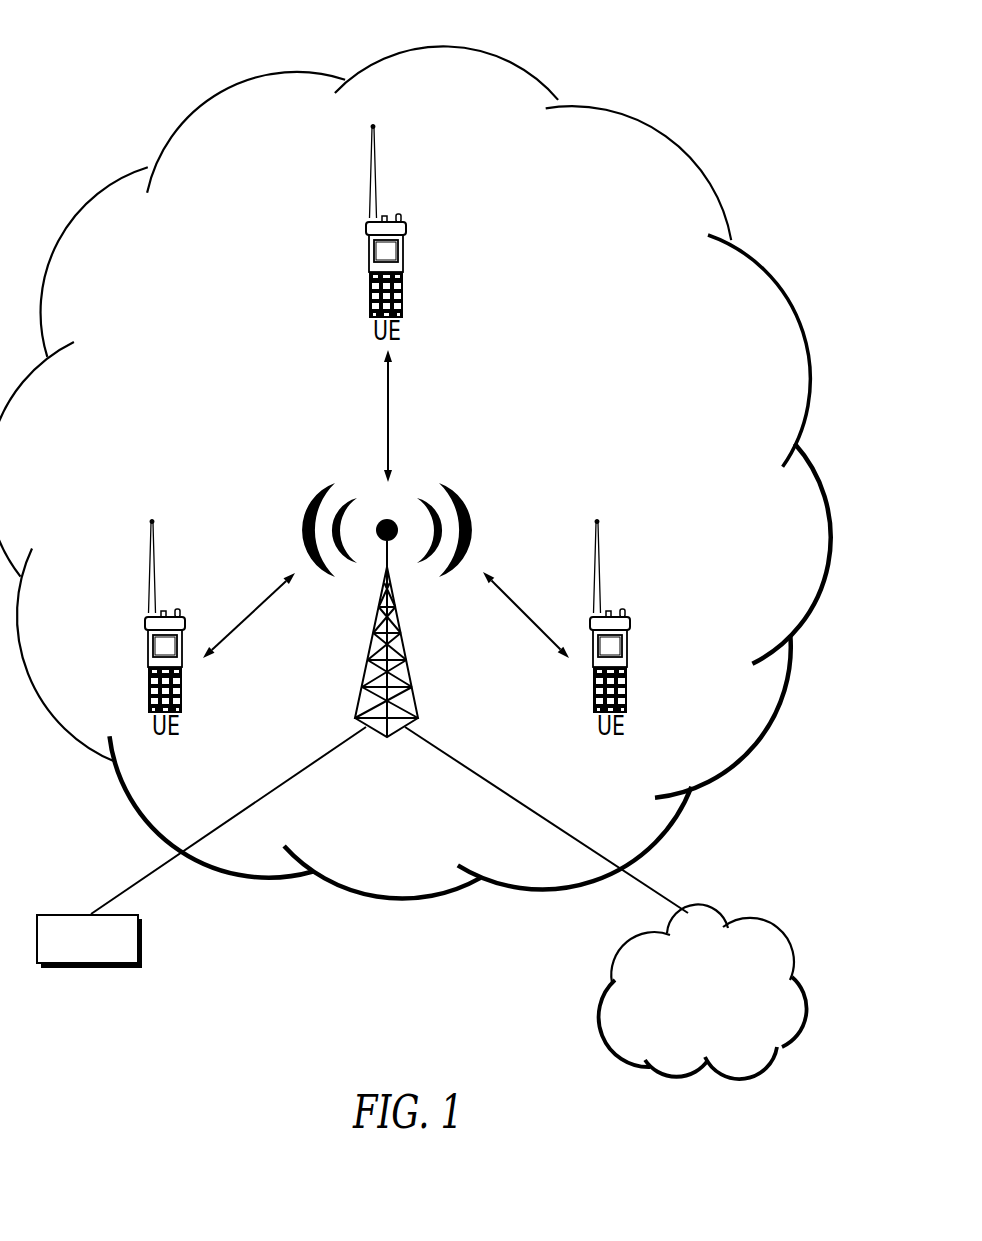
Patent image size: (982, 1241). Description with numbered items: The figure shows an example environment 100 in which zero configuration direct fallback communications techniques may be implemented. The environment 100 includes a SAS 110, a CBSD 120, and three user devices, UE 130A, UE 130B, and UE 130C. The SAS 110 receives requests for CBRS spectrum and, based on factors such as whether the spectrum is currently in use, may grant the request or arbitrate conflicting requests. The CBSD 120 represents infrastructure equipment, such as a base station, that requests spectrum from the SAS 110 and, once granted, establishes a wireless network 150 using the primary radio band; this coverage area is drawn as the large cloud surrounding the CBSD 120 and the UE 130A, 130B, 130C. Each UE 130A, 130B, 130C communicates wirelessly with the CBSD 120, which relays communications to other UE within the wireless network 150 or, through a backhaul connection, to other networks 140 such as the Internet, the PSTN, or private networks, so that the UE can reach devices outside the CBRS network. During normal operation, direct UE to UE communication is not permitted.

The environment 100 is at (68, 38).
The SAS 110 is at (139, 944).
The CBSD 120 is at (405, 652).
The UE 130A is at (178, 714).
The UE 130B is at (401, 320).
The UE 130C is at (622, 714).
The networks 140 is at (762, 921).
The wireless network 150 is at (663, 94).